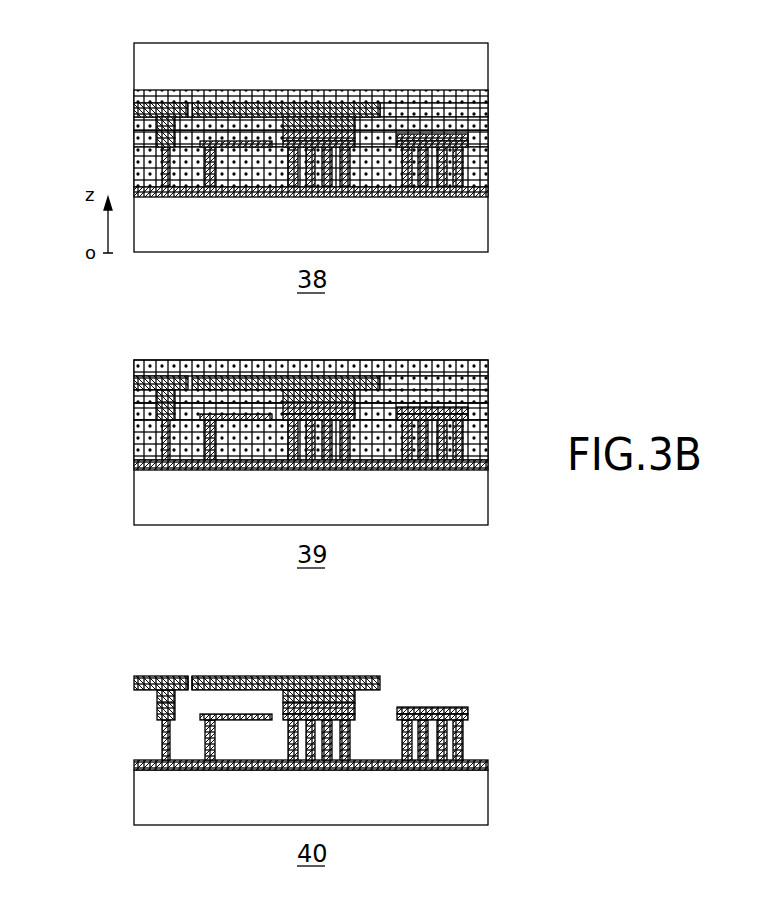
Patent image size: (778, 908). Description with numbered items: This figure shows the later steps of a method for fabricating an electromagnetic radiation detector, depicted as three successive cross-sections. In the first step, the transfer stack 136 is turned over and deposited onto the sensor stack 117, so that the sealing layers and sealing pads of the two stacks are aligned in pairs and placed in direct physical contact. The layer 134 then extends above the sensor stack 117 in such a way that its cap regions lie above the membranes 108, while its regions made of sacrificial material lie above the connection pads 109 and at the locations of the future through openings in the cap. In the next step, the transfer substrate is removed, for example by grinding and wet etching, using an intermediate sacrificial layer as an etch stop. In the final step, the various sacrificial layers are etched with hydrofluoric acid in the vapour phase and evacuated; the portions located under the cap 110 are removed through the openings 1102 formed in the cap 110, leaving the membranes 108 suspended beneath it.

The membranes 108 is at (232, 141).
The connection pads 109 is at (430, 134).
The cap 110 is at (384, 682).
The openings 1102 is at (187, 673).
The sensor stack 117 is at (498, 128).
The layer 134 is at (135, 117).
The transfer stack 136 is at (498, 43).